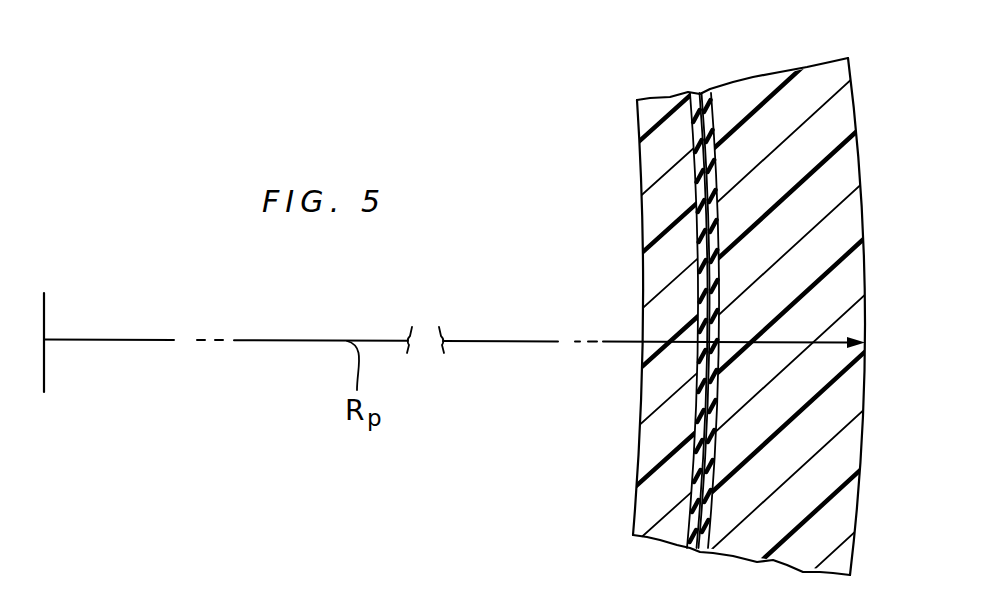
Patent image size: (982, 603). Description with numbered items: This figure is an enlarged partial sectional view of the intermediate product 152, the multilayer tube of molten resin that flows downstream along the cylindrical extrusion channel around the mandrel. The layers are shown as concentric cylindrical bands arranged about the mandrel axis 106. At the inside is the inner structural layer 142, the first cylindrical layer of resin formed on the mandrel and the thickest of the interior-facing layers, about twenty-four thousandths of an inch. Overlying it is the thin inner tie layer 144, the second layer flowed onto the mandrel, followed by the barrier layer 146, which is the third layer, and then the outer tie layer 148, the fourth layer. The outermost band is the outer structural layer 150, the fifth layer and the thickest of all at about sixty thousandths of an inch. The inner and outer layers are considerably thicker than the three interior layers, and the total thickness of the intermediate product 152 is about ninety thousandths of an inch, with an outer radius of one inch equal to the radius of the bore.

The axis of rotation 106 is at (45, 323).
The inner ring section 142 is at (653, 108).
The first thin layer 144 is at (693, 95).
The second thin layer 146 is at (699, 92).
The outer ring section 148 is at (712, 92).
The outer surface 150 is at (828, 70).
The ring assembly 152 is at (620, 271).